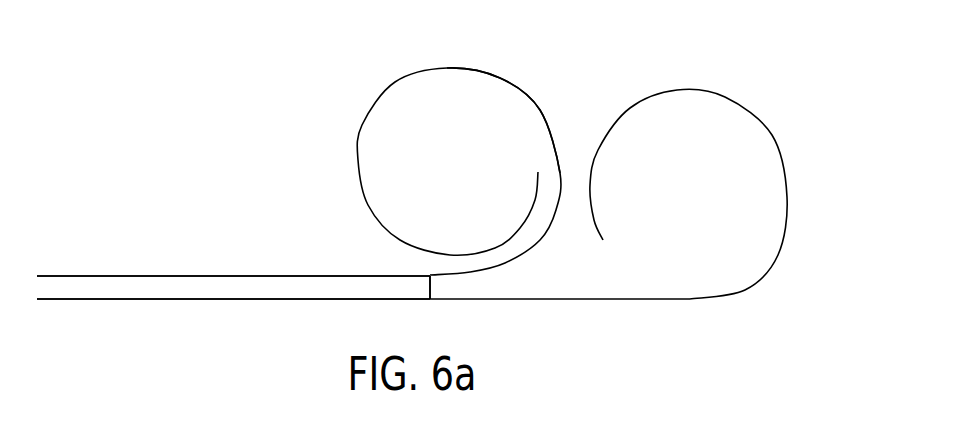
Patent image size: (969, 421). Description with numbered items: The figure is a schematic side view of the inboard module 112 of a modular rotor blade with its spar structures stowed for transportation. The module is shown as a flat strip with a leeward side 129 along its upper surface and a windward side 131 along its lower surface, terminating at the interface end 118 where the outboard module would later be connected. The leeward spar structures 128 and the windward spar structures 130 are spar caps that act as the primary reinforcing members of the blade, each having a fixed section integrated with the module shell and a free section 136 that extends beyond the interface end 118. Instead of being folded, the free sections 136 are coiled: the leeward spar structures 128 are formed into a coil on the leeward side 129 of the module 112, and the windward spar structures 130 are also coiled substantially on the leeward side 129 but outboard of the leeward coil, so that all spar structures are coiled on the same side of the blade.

The inboard module 112 is at (137, 291).
The interface end 118 is at (430, 290).
The leeward spar structures 128 is at (359, 173).
The leeward side 129 is at (183, 274).
The windward spar structures 130 is at (602, 301).
The windward side 131 is at (183, 302).
The free section 136 is at (517, 73).